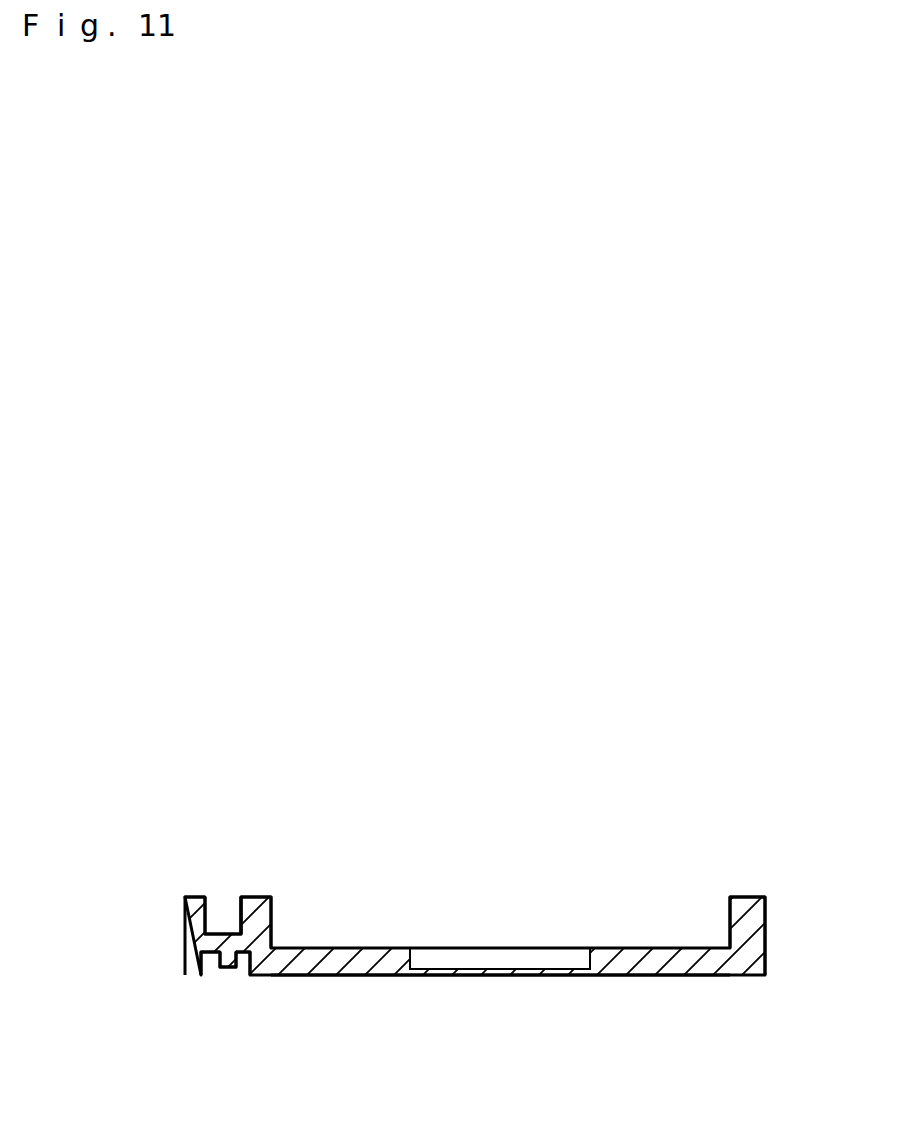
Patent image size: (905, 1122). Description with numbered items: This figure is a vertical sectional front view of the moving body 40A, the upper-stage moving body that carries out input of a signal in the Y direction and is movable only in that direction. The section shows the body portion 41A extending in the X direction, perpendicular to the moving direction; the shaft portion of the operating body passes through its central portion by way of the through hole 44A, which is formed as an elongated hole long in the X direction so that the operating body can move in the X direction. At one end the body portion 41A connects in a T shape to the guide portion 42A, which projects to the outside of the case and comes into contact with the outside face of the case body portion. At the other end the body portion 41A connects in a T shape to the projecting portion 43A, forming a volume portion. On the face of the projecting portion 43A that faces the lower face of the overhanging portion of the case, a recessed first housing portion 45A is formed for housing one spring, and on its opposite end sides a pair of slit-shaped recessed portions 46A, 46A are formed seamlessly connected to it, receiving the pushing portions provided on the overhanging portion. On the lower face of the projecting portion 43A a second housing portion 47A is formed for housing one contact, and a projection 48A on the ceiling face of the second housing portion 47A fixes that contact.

The moving body 40A is at (787, 866).
The body portion 41A is at (643, 978).
The guide portion 42A is at (766, 918).
The projecting portion 43A is at (185, 922).
The through hole 44A is at (510, 956).
The first housing portion 45A is at (230, 906).
The recessed portions 46A is at (222, 905).
The second housing portion 47A is at (208, 975).
The projection 48A is at (229, 975).